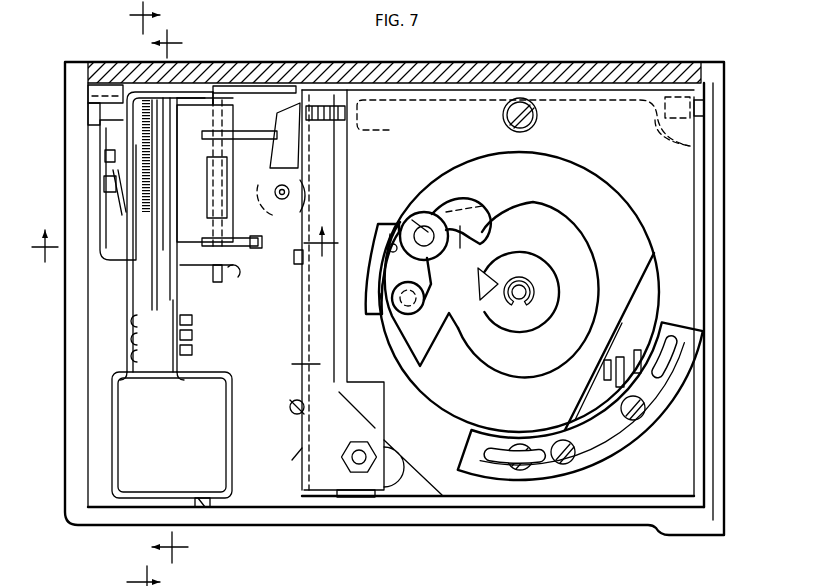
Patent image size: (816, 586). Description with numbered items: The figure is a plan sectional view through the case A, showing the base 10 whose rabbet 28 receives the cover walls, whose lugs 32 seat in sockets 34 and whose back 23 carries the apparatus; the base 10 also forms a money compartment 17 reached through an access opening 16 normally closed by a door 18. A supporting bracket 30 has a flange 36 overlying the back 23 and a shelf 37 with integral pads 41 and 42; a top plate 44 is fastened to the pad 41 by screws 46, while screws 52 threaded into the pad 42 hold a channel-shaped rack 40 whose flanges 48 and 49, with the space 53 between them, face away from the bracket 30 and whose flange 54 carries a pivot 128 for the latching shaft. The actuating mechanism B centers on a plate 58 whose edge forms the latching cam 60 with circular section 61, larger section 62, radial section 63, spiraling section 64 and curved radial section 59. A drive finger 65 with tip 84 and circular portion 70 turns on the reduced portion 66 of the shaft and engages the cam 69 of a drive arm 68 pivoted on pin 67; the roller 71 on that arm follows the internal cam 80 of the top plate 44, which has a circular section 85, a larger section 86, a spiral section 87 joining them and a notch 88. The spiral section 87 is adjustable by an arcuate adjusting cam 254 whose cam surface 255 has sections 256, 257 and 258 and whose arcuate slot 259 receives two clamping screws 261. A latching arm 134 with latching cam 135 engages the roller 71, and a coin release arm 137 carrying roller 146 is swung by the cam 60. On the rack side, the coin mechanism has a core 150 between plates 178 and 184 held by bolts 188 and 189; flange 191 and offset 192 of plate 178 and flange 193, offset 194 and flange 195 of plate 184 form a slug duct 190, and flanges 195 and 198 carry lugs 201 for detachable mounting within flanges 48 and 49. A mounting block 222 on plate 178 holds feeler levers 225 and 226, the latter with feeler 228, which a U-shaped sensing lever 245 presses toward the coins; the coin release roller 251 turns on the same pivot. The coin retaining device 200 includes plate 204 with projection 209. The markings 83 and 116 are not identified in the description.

The base 10 is at (65, 510).
The back 23 is at (643, 70).
The flange 36 is at (596, 90).
The shelf 37 is at (643, 214).
The top plate 44 is at (712, 203).
The rabbet 28 is at (712, 265).
The sockets 34 is at (96, 123).
The lugs 32 is at (107, 95).
The money compartment 17 is at (156, 294).
The door 18 is at (158, 296).
The access opening 16 is at (45, 237).
The section line 116 is at (321, 231).
The case A is at (729, 530).
The actuating mechanism B is at (135, 282).
The coin retaining device 200 is at (100, 233).
The projection 209 is at (104, 160).
The plate 204 is at (103, 187).
The plate 178 is at (177, 299).
The flange 198 is at (213, 90).
The flange 48 is at (263, 86).
The mounting block 222 is at (192, 186).
The feeler lever 226 is at (252, 138).
The feeler lever 225 is at (253, 248).
The feeler 228 is at (218, 280).
The screws 52 is at (294, 100).
The coin release roller 251 is at (290, 177).
The sensing lever 245 is at (295, 266).
The plate 184 is at (135, 305).
The bolt 188 is at (132, 336).
The bolt 189 is at (132, 356).
The flange 191 is at (213, 372).
The duct 190 is at (135, 473).
The offset 192 is at (228, 425).
The flange 193 is at (131, 380).
The core 150 is at (162, 360).
The offset 194 is at (122, 456).
The flange 195 is at (170, 491).
The lugs 201 is at (204, 508).
The channel-shaped rack 40 is at (300, 433).
The pivot 128 is at (352, 452).
The flange 54 is at (294, 364).
The flange 49 is at (273, 496).
The space 53 is at (285, 485).
The pad 42 is at (374, 126).
The screws 46 is at (520, 98).
The pad 41 is at (562, 130).
The internal cam 80 is at (612, 184).
The circular section 85 is at (457, 172).
The circular section 86 is at (419, 396).
The plate 58 is at (541, 231).
The tip 84 is at (484, 228).
The drive finger 65 is at (503, 256).
The pawl tip 83 is at (482, 284).
The reduced portion 66 is at (520, 300).
The circular portion 70 is at (540, 307).
The circular section 61 is at (590, 308).
The supporting bracket 30 is at (630, 262).
The curved radial section 59 is at (422, 212).
The latching cam 60 is at (511, 204).
The spiraling section 64 is at (490, 204).
The drive arm 68 is at (448, 212).
The cam 69 is at (461, 247).
The roller 71 is at (412, 212).
The notch 88 is at (390, 222).
The outwardly disposed section 62 is at (400, 323).
The radial section 63 is at (432, 345).
The pin 67 is at (414, 306).
The coin release arm 137 is at (375, 317).
The roller 146 is at (374, 233).
The latching arm 134 is at (374, 276).
The latching cam 135 is at (382, 286).
The adjusting cam 254 is at (620, 441).
The arcuate slot 259 is at (594, 452).
The cam surface 255 is at (490, 434).
The section 256 is at (650, 356).
The section 257 is at (553, 434).
The clamping screws 261 is at (637, 416).
The section 258 is at (702, 394).
The spiral section 87 is at (618, 400).